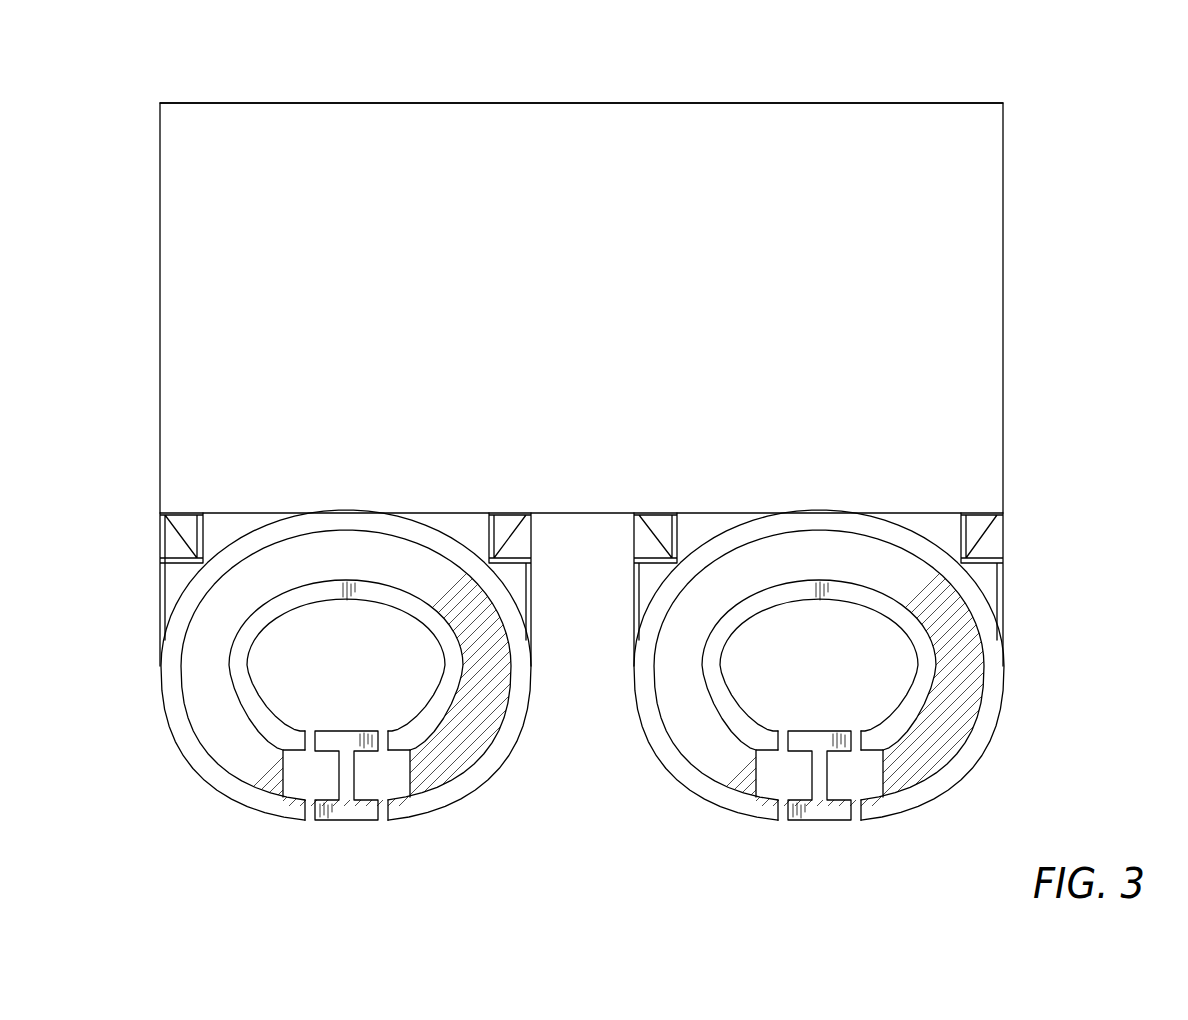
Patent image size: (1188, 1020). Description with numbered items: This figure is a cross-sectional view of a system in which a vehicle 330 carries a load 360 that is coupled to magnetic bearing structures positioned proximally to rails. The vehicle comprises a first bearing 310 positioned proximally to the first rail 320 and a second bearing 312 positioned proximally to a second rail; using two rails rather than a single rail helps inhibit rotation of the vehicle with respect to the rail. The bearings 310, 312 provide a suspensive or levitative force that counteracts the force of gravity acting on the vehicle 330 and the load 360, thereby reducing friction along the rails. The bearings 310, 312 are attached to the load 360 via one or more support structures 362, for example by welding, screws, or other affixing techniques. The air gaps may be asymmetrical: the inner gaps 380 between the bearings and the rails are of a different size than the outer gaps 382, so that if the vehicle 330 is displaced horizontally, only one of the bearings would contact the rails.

The first bearing 310 is at (126, 100).
The second bearing 312 is at (1000, 713).
The first rail 320 is at (348, 824).
The vehicle 330 is at (593, 102).
The load 360 is at (162, 295).
The support structure 362 is at (160, 537).
The inner gap 380 is at (383, 830).
The outer gap 382 is at (310, 830).